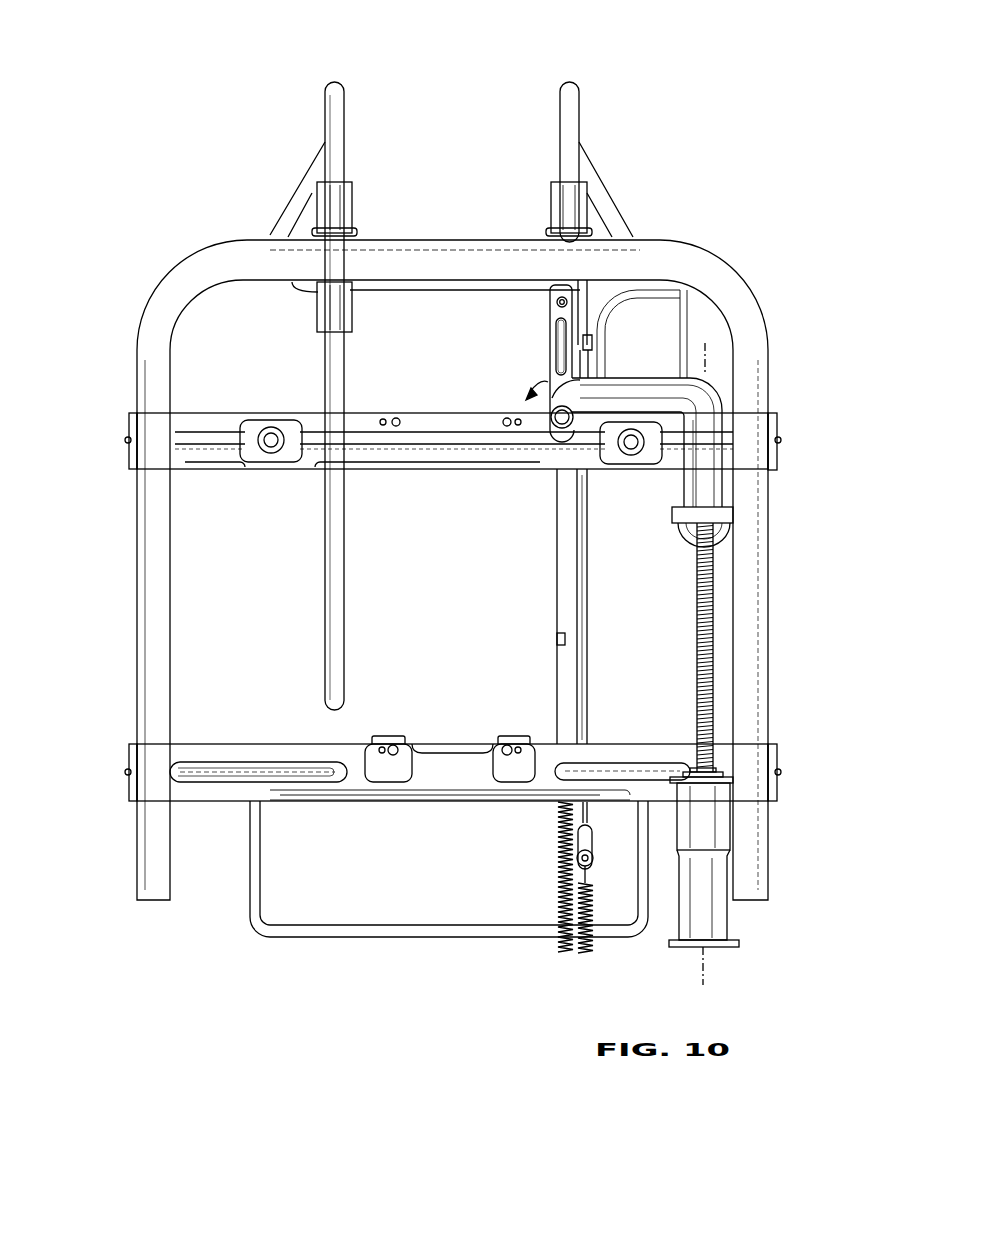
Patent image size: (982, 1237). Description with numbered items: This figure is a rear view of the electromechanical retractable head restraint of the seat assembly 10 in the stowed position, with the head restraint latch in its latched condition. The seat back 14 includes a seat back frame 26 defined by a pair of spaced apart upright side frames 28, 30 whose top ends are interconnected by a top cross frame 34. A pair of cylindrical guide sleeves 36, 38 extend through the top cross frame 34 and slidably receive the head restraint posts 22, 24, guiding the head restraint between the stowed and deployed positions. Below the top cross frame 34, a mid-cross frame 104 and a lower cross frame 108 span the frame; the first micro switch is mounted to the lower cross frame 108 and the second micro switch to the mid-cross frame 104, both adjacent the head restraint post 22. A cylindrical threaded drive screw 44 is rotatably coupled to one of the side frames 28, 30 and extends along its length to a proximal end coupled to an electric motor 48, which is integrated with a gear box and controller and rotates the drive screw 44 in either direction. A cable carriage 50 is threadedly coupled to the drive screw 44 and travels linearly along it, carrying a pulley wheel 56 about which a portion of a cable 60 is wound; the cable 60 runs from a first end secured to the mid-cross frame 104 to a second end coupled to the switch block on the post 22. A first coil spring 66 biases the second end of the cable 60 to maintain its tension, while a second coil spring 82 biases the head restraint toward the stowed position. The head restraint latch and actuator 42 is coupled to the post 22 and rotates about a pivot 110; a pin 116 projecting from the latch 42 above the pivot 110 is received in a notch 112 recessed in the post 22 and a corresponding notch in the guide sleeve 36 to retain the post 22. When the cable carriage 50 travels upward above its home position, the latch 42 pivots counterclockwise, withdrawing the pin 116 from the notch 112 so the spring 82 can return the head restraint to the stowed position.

The seat assembly 10 is at (655, 124).
The seat back 14 is at (740, 294).
The head restraint post 22 is at (560, 583).
The head restraint post 24 is at (344, 376).
The seat back frame 26 is at (152, 300).
The upright side frame 28 is at (758, 628).
The upright side frame 30 is at (152, 690).
The top cross frame 34 is at (439, 252).
The cylindrical guide sleeve 36 is at (555, 185).
The cylindrical guide sleeve 38 is at (350, 185).
The head restraint latch and actuator 42 is at (550, 333).
The threaded drive screw 44 is at (697, 702).
The electric motor 48 is at (712, 928).
The cable carriage 50 is at (675, 515).
The pulley wheel 56 is at (697, 528).
The cable 60 is at (590, 618).
The first coil spring 66 is at (595, 905).
The second coil spring 82 is at (558, 875).
The mid-cross frame 104 is at (447, 458).
The lower cross frame 108 is at (262, 757).
The pivot 110 is at (558, 425).
The notch 112 is at (557, 640).
The pin 116 is at (556, 303).